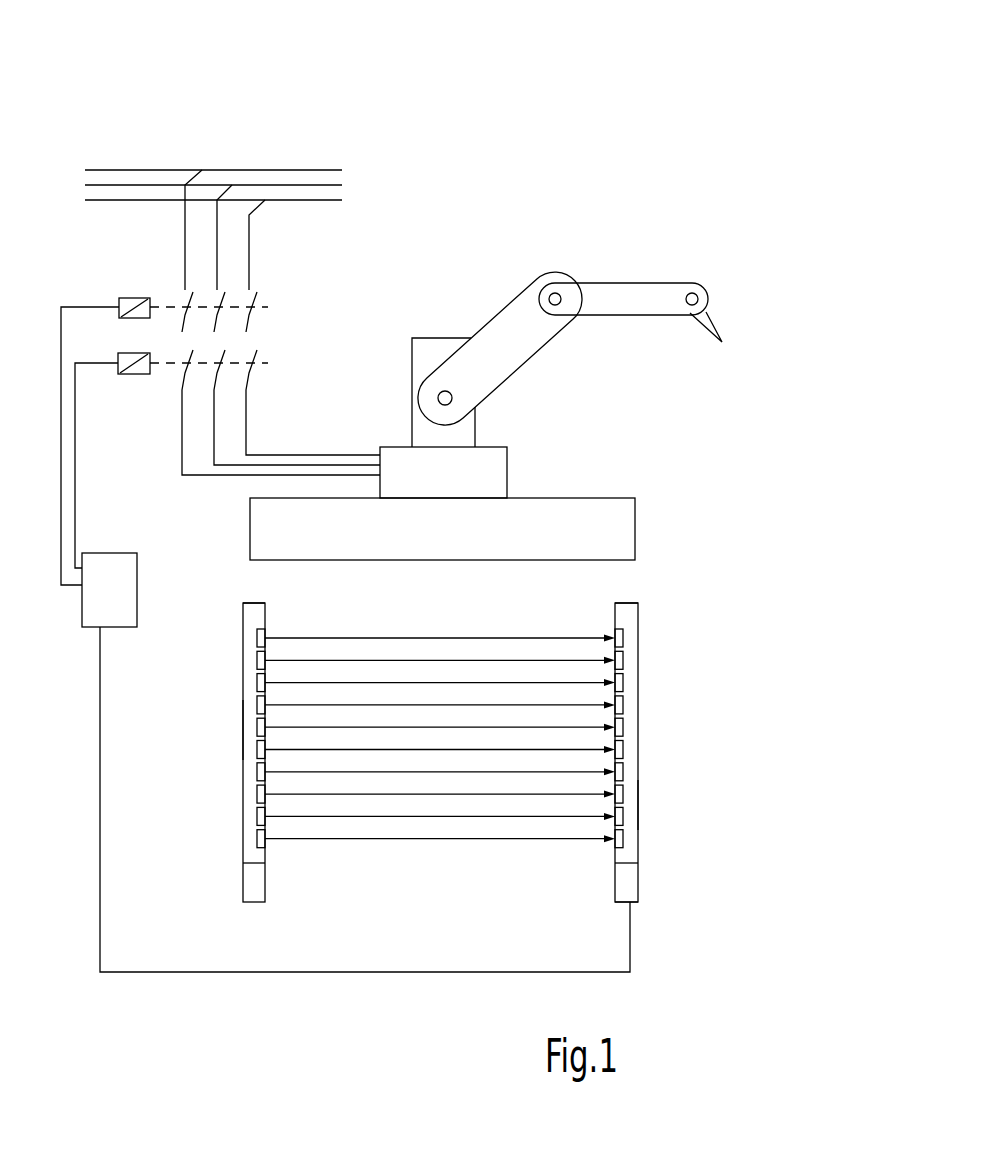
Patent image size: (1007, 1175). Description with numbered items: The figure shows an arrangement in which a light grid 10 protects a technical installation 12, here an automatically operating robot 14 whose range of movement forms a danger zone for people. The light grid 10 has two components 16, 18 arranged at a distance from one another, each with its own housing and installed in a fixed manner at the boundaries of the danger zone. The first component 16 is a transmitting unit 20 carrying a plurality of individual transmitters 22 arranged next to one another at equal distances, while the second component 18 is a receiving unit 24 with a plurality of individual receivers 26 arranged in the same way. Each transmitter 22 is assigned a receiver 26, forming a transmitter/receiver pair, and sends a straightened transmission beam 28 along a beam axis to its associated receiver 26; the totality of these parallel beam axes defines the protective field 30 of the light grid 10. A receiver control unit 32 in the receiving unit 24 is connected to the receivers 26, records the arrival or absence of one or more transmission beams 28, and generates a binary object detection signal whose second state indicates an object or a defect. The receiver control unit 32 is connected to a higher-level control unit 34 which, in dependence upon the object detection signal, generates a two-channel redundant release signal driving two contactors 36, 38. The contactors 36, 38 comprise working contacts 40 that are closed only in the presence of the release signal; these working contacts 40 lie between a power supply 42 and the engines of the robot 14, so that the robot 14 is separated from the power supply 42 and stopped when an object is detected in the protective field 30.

The light grid 10 is at (696, 726).
The technical installation 12 is at (555, 168).
The robot 14 is at (620, 292).
The first component 16 is at (242, 624).
The second component 18 is at (640, 630).
The transmitting unit 20 is at (247, 728).
The transmitter 22 is at (260, 642).
The receiving unit 24 is at (631, 806).
The receiver 26 is at (615, 633).
The transmission beam 28 is at (393, 637).
The protective field 30 is at (419, 860).
The receiver control unit 32 is at (628, 882).
The higher-level control unit 34 is at (93, 603).
The contactor 36 is at (132, 302).
The contactor 38 is at (140, 370).
The working contacts 40 is at (231, 322).
The power supply 42 is at (213, 185).